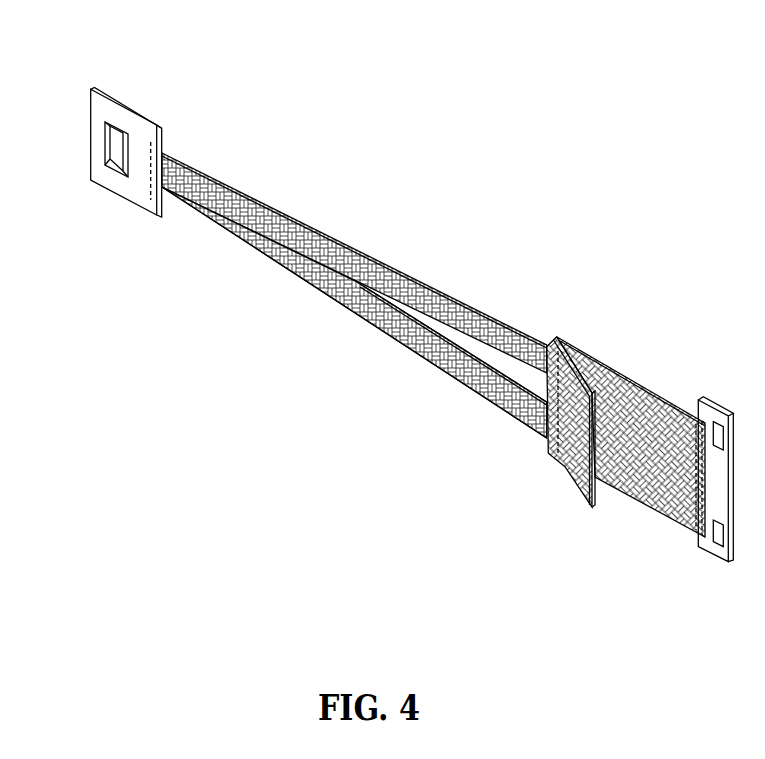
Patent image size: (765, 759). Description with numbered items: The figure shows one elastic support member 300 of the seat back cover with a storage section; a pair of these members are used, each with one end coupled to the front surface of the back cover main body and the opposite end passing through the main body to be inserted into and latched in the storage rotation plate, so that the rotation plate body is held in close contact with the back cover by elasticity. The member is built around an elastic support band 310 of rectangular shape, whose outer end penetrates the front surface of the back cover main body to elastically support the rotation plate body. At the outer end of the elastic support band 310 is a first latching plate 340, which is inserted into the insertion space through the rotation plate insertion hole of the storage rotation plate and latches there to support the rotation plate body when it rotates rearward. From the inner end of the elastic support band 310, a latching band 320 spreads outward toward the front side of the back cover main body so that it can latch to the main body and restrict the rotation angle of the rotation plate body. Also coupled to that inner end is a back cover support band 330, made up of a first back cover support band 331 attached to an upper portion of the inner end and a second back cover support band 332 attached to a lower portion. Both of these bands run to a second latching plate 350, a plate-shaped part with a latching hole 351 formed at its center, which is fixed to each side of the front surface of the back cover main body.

The elastic support member 300 is at (415, 220).
The elastic support band 310 is at (650, 500).
The latching band 320 is at (580, 487).
The back cover support band 330 is at (354, 316).
The first back cover support band 331 is at (262, 225).
The second back cover support band 332 is at (470, 392).
The first latching plate 340 is at (715, 552).
The second latching plate 350 is at (132, 188).
The latching hole 351 is at (107, 140).